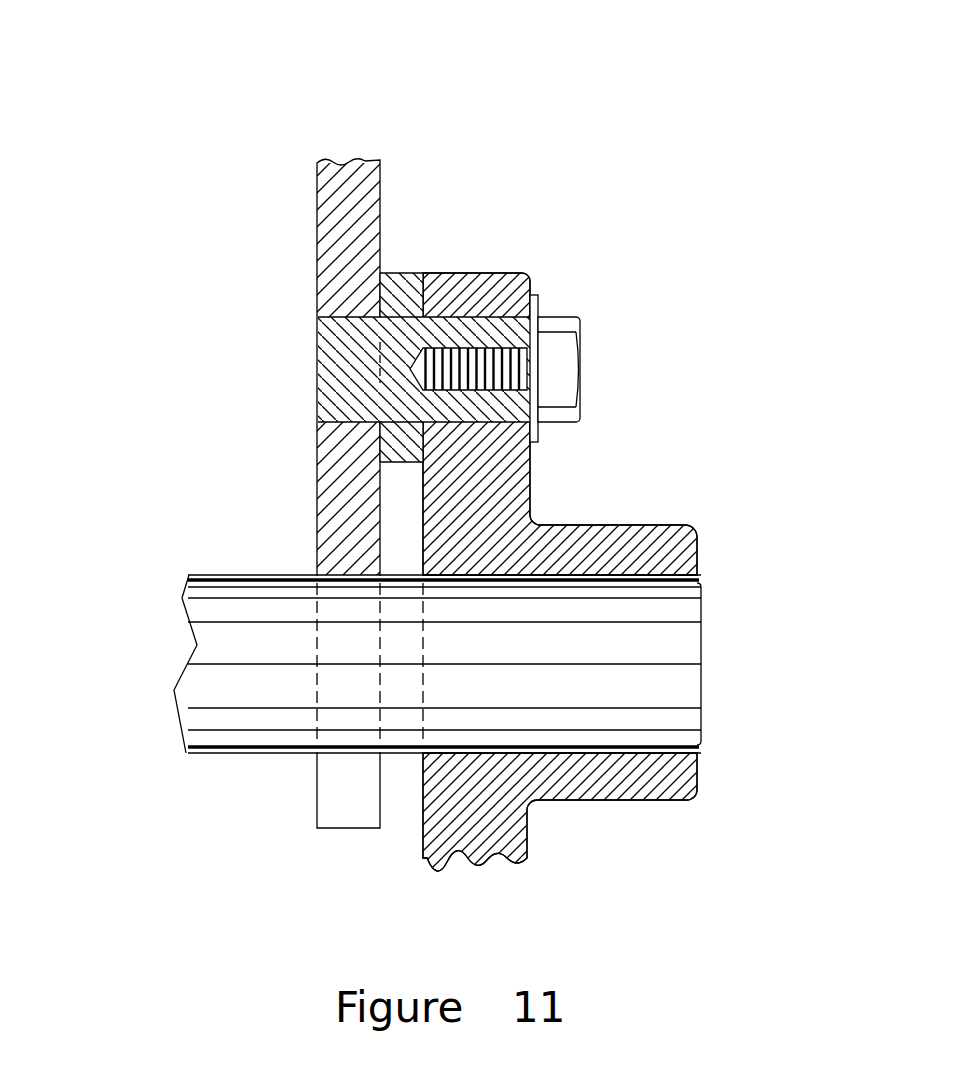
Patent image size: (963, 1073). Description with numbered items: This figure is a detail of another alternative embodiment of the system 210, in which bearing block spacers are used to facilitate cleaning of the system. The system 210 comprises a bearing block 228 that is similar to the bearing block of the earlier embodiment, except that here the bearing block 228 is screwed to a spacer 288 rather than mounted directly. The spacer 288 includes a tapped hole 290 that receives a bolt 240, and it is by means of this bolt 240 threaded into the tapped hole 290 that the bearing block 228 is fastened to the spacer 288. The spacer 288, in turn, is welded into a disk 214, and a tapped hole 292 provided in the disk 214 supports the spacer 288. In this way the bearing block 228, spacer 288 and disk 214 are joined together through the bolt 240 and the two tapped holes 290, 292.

The system 210 is at (238, 113).
The disk 214 is at (338, 257).
The bearing block 228 is at (690, 532).
The bolt 240 is at (582, 378).
The spacer 288 is at (410, 285).
The tapped hole 290 is at (533, 358).
The tapped hole 292 is at (318, 410).